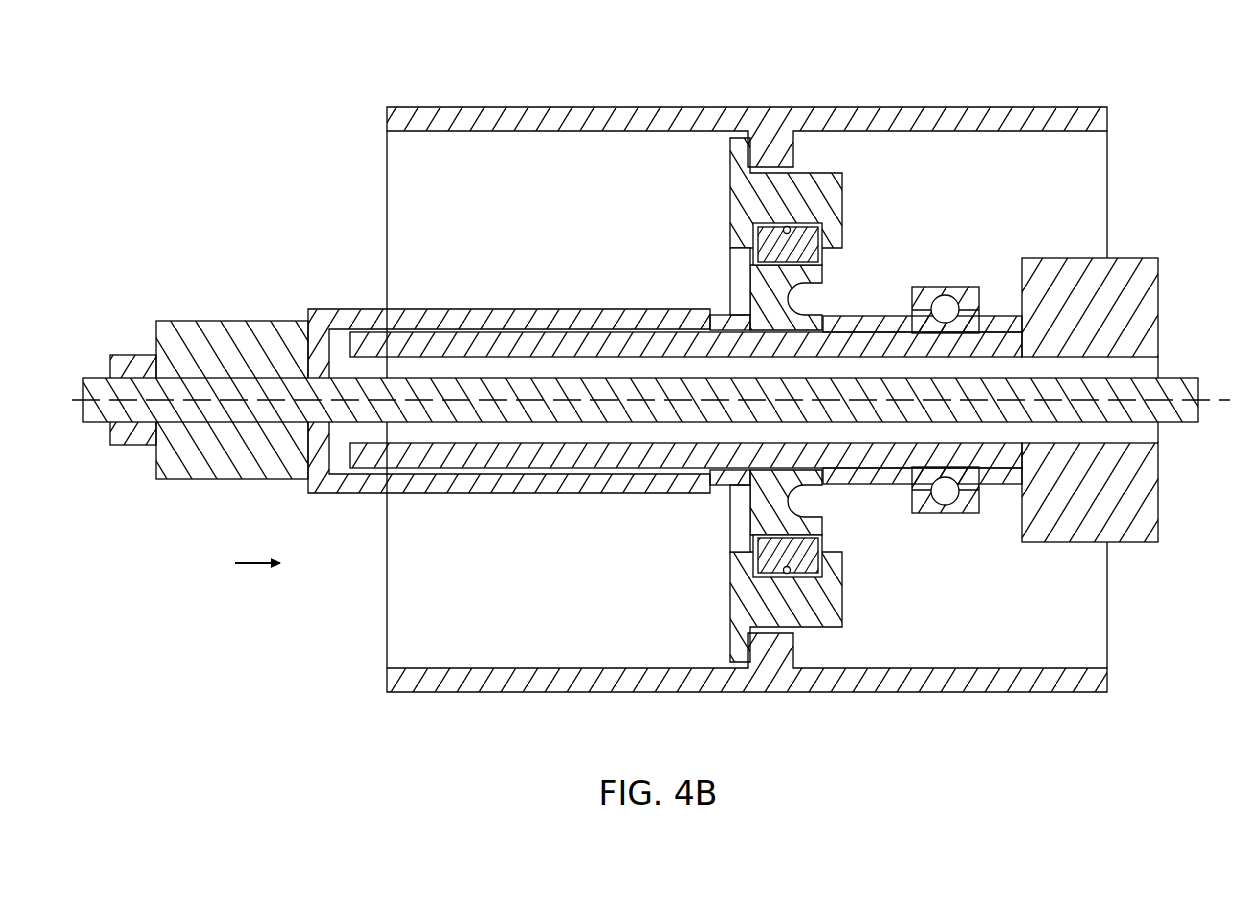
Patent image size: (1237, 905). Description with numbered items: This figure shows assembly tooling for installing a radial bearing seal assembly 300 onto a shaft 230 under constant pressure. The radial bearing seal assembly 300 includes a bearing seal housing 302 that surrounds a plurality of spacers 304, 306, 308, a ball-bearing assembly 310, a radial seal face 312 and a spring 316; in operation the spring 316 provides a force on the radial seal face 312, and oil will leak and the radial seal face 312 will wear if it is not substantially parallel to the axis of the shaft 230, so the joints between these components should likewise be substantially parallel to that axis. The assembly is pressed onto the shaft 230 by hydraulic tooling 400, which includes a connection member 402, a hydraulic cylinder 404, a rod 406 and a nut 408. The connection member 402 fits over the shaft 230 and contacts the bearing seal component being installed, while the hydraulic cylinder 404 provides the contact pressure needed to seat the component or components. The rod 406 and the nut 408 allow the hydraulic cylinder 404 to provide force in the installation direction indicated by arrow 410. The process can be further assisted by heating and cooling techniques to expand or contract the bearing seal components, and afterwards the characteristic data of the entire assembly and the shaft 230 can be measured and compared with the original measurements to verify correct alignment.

The radial bearing seal assembly 300 is at (772, 351).
The bearing seal housing 302 is at (524, 106).
The spacer 304 is at (998, 314).
The spacer 306 is at (868, 314).
The spacer 308 is at (728, 310).
The ball-bearing assembly 310 is at (945, 286).
The radial seal face 312 is at (783, 243).
The spring 316 is at (789, 226).
The shaft 230 is at (518, 331).
The hydraulic tooling 400 is at (408, 321).
The connection member 402 is at (322, 308).
The hydraulic cylinder 404 is at (182, 320).
The rod 406 is at (93, 377).
The nut 408 is at (123, 354).
The arrow 410 is at (255, 564).